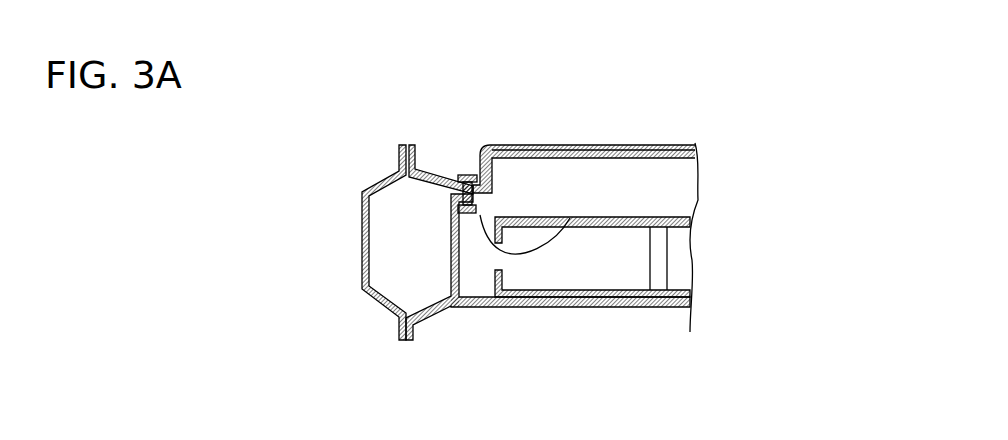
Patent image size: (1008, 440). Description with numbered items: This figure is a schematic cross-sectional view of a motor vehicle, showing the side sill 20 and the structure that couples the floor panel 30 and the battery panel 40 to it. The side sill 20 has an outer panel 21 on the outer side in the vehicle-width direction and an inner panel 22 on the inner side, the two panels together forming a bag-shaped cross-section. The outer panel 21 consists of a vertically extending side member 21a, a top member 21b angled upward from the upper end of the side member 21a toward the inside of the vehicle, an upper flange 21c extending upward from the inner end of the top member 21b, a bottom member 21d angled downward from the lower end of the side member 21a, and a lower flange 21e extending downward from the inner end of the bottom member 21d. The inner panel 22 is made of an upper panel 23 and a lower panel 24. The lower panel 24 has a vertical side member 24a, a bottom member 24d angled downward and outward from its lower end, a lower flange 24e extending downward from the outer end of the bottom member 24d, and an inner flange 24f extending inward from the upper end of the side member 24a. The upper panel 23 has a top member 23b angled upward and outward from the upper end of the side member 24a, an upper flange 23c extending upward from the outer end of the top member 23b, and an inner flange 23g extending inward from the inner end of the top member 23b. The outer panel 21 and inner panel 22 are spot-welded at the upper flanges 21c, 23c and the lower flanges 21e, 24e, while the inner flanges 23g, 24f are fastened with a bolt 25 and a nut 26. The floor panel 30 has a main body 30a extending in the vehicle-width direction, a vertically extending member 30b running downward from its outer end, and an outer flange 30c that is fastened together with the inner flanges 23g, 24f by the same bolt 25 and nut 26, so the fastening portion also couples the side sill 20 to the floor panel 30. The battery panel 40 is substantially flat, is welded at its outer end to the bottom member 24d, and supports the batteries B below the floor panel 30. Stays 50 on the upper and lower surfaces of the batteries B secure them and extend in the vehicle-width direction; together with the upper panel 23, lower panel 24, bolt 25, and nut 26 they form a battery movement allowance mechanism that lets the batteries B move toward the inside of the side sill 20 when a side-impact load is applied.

The side sill 20 is at (362, 305).
The outer panel 21 is at (360, 192).
The side member 21a is at (360, 220).
The top member 21b is at (380, 177).
The upper flange 21c is at (398, 146).
The bottom member 21d is at (386, 314).
The lower flange 21e is at (397, 342).
The inner panel 22 is at (295, 232).
The upper panel 23 is at (442, 197).
The top member 23b is at (436, 178).
The upper flange 23c is at (418, 147).
The inner flange 23g is at (478, 193).
The lower panel 24 is at (448, 237).
The side member 24a is at (460, 262).
The bottom member 24d is at (428, 318).
The lower flange 24e is at (418, 337).
The inner flange 24f is at (478, 201).
The bolt 25 is at (462, 176).
The nut 26 is at (570, 218).
The floor panel 30 is at (612, 146).
The main body 30a is at (575, 128).
The vertically extending member 30b is at (489, 148).
The outer flange 30c is at (450, 178).
The battery panel 40 is at (624, 308).
The stay 50 is at (640, 217).
The battery B is at (668, 222).